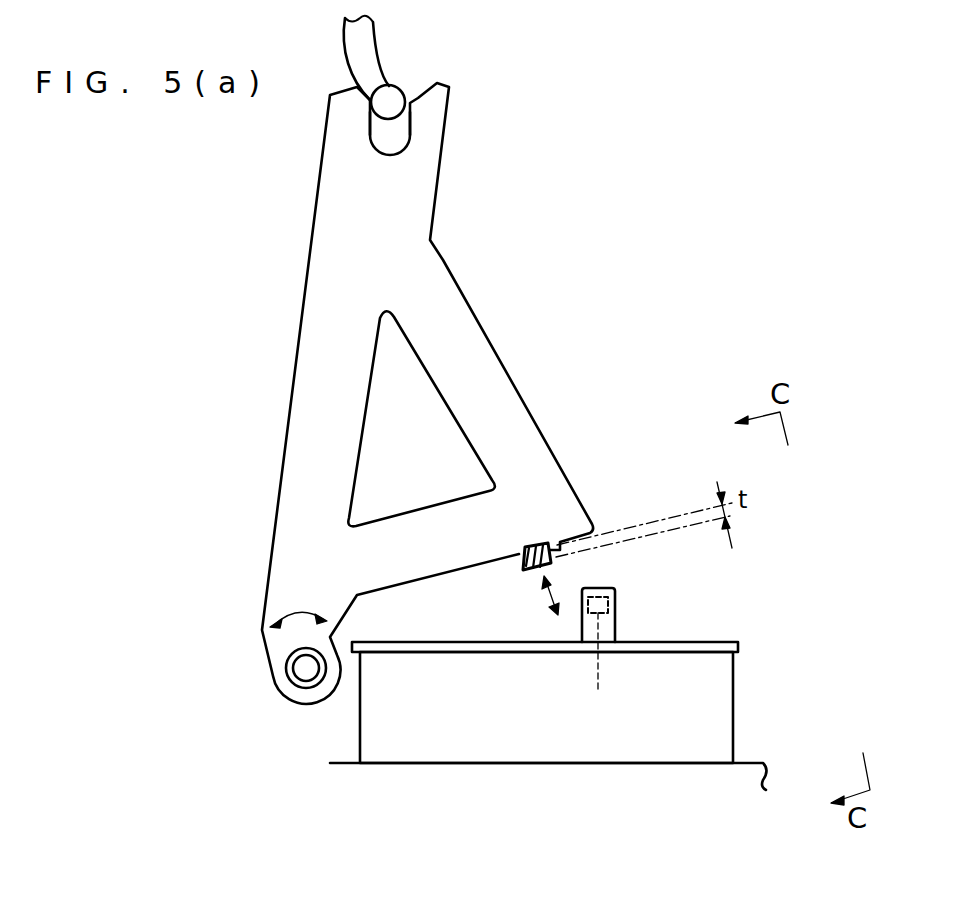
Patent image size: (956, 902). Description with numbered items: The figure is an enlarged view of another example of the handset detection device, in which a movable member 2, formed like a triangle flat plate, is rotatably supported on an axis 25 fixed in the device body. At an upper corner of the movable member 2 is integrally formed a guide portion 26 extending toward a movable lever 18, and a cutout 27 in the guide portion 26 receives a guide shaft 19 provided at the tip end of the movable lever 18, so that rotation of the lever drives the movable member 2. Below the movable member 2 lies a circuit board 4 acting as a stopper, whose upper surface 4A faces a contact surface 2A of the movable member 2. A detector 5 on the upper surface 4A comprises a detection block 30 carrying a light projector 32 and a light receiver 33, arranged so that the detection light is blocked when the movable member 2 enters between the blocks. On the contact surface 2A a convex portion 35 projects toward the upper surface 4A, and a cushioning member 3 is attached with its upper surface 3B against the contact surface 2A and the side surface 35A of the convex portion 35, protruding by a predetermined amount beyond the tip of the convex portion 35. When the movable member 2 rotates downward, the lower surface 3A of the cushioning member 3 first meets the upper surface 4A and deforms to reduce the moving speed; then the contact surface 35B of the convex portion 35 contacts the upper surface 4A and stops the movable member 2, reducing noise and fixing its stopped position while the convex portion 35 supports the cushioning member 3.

The movable member 2 is at (391, 565).
The contact surface 2A is at (461, 571).
The cushioning member 3 is at (519, 558).
The lower surface 3A is at (532, 568).
The upper surface 3B is at (528, 547).
The circuit board 4 is at (504, 735).
The upper surface 4A is at (703, 640).
The detector 5 is at (578, 625).
The movable lever 18 is at (368, 40).
The guide shaft 19 is at (393, 99).
The axis 25 is at (302, 673).
The guide portion 26 is at (417, 203).
The cutout 27 is at (407, 124).
The detection block 30 is at (607, 582).
The light projector 32 is at (634, 665).
The light receiver 33 is at (603, 673).
The convex portion 35 is at (557, 542).
The side surface 35A is at (532, 545).
The contact surface 35B is at (556, 560).